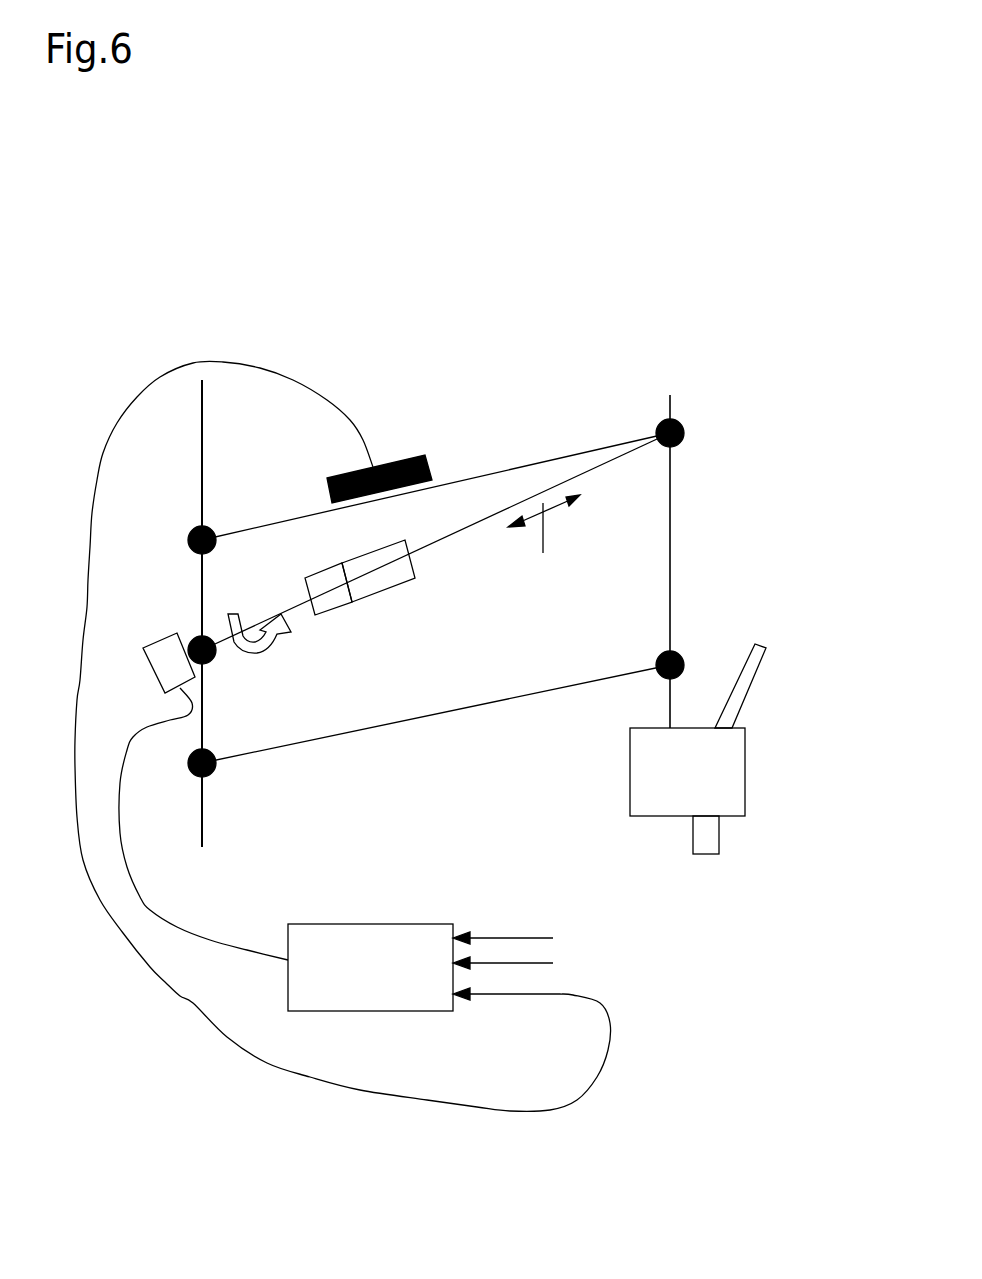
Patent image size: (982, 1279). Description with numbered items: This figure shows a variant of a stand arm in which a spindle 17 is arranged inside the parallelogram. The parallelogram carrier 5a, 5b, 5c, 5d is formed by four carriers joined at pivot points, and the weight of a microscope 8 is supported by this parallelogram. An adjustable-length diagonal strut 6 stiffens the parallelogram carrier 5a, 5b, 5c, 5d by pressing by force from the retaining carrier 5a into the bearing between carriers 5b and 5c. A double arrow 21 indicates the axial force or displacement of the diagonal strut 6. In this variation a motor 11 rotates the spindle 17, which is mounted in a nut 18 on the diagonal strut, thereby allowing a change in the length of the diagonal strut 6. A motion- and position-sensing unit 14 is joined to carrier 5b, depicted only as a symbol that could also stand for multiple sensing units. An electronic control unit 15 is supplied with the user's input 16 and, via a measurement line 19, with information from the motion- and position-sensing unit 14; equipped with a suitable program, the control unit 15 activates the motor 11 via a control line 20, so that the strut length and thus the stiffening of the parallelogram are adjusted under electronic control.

The carrier 5a is at (198, 588).
The carrier 5b is at (503, 468).
The carrier 5c is at (703, 561).
The carrier 5d is at (440, 714).
The diagonal strut 6 is at (582, 478).
The microscope 8 is at (730, 790).
The motor 11 is at (172, 637).
The motion- and position-sensing unit 14 is at (412, 457).
The control system 15 is at (388, 985).
The input 16 is at (531, 966).
The spindle 17 is at (411, 610).
The nut 18 is at (340, 602).
The measurement line 19 is at (187, 1008).
The control line 20 is at (152, 910).
The double arrow 21 is at (544, 540).